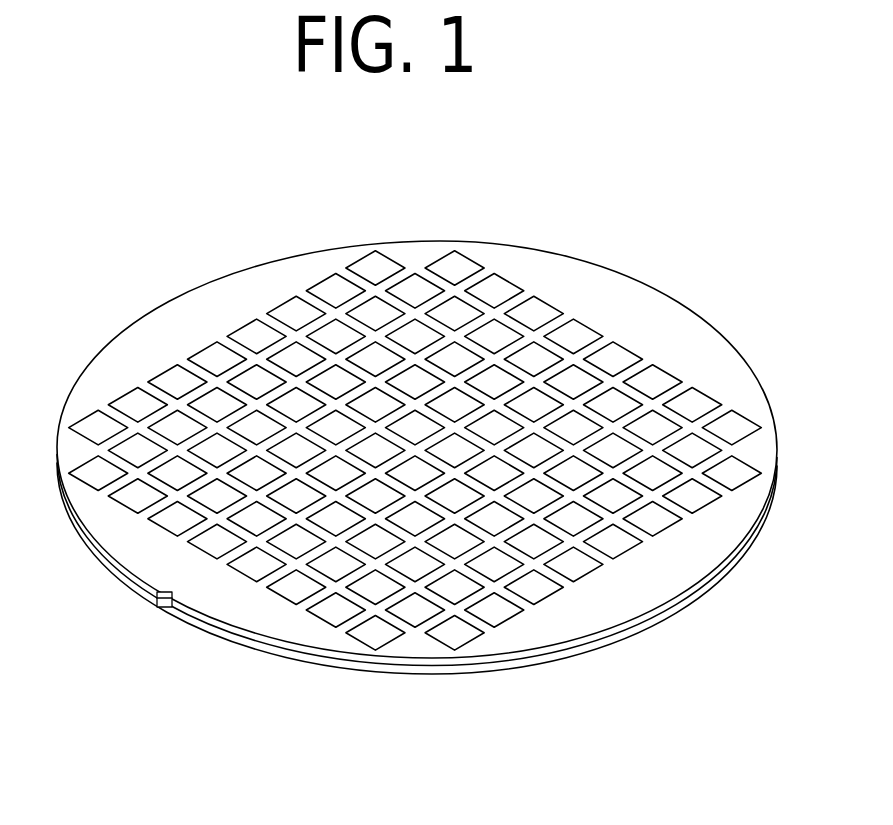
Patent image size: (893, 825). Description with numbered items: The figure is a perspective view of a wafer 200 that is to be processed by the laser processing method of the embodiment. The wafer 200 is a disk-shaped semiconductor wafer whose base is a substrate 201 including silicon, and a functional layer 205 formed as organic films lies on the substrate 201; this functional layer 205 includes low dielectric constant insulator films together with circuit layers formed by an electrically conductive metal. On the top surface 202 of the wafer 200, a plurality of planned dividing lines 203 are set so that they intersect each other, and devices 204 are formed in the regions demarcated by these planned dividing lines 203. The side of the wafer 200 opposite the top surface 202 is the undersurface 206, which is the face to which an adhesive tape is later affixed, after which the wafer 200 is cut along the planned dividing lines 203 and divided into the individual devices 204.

The wafer 200 is at (412, 440).
The substrate 201 is at (500, 665).
The top surface 202 is at (722, 378).
The planned dividing lines 203 is at (400, 426).
The devices 204 is at (127, 450).
The functional layer 205 is at (583, 643).
The undersurface 206 is at (398, 673).